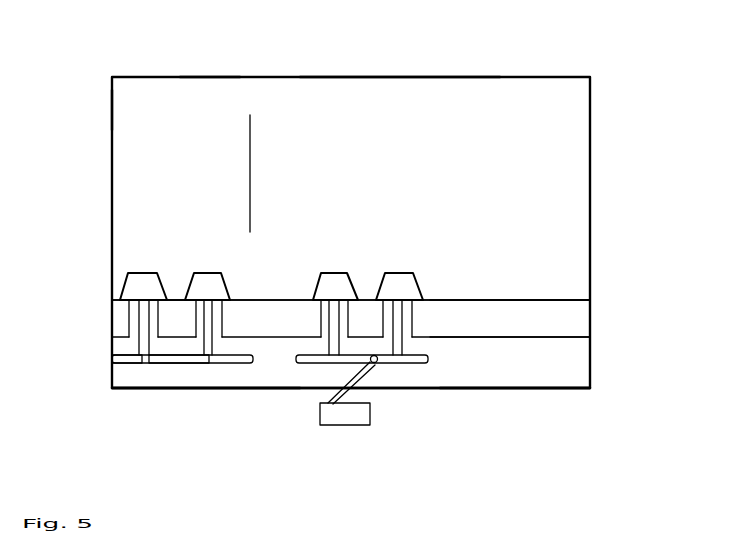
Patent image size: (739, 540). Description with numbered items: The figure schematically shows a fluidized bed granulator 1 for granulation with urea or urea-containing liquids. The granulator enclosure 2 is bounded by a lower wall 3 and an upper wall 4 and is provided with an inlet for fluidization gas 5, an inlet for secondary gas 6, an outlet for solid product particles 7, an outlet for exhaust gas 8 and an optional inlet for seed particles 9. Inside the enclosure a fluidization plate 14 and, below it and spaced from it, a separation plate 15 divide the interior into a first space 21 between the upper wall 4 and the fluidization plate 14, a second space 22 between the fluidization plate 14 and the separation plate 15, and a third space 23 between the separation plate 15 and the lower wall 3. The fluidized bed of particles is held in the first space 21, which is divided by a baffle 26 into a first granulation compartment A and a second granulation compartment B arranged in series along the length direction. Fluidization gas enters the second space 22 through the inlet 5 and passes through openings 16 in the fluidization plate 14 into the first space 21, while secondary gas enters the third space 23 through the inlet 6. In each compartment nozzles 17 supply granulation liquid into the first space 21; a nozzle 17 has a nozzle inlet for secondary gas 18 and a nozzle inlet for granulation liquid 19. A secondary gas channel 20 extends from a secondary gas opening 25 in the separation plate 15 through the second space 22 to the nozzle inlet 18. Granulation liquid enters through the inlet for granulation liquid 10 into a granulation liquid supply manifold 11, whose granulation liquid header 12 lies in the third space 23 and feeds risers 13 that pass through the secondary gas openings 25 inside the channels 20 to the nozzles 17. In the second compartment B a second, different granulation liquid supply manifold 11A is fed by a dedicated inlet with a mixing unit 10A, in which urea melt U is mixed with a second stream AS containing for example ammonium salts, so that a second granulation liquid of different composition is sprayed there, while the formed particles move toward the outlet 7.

The fluidized bed granulator 1 is at (143, 67).
The granulator enclosure 2 is at (424, 77).
The lower wall 3 is at (526, 389).
The upper wall 4 is at (203, 72).
The inlet for fluidization gas 5 is at (110, 325).
The inlet for secondary gas 6 is at (110, 382).
The outlet for solid product particles 7 is at (592, 289).
The outlet for exhaust gas 8 is at (453, 77).
The inlet for seed particles 9 is at (110, 105).
The inlet for granulation liquid 10 is at (110, 360).
The mixing unit 10A is at (320, 418).
The granulation liquid supply manifold 11 is at (138, 358).
The second granulation liquid supply manifold 11A is at (398, 363).
The granulation liquid header 12 is at (188, 360).
The riser 13 is at (148, 358).
The fluidization plate 14 is at (507, 300).
The separation plate 15 is at (496, 337).
The openings 16 is at (170, 298).
The nozzle 17 is at (145, 273).
The nozzle inlet for secondary gas 18 is at (217, 300).
The nozzle inlet for granulation liquid 19 is at (206, 300).
The secondary gas channel 20 is at (222, 310).
The first space 21 is at (351, 286).
The second space 22 is at (351, 326).
The third space 23 is at (351, 383).
The secondary gas opening 25 is at (215, 331).
The baffle 26 is at (252, 198).
The first granulation compartment A is at (209, 100).
The second granulation compartment B is at (267, 100).
The urea melt U is at (333, 430).
The ammonium salt stream AS is at (358, 430).